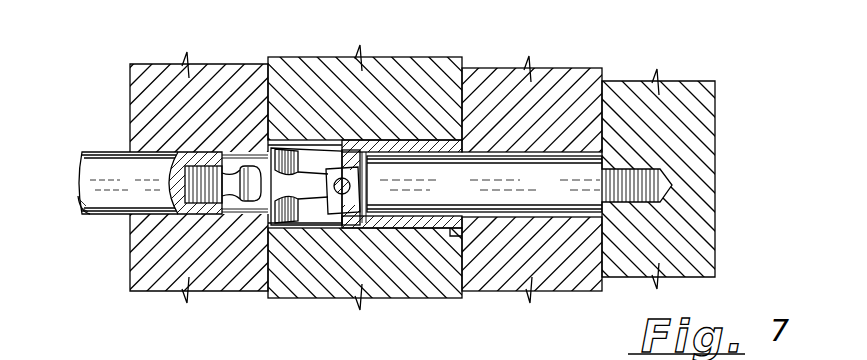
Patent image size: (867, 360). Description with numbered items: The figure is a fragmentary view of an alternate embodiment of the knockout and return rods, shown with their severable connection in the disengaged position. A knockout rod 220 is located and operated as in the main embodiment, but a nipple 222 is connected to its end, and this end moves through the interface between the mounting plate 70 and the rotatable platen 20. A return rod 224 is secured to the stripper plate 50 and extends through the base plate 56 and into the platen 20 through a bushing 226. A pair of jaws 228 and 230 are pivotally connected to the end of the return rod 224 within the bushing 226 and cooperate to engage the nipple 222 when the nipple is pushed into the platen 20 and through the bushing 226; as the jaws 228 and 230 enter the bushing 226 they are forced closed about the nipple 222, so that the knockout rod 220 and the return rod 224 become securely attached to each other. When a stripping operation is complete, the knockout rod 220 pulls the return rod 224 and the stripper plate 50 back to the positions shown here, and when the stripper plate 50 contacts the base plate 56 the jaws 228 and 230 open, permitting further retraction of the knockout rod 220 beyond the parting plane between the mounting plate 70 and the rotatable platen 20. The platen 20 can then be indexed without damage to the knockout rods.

The mounting plate 70 is at (172, 76).
The rotatable platen 20 is at (376, 76).
The base plate 56 is at (527, 84).
The stripper plate 50 is at (678, 96).
The knockout rod 220 is at (102, 157).
The nipple 222 is at (240, 212).
The return rod 224 is at (533, 170).
The bushing 226 is at (393, 146).
The jaw 228 is at (310, 160).
The jaw 230 is at (319, 218).